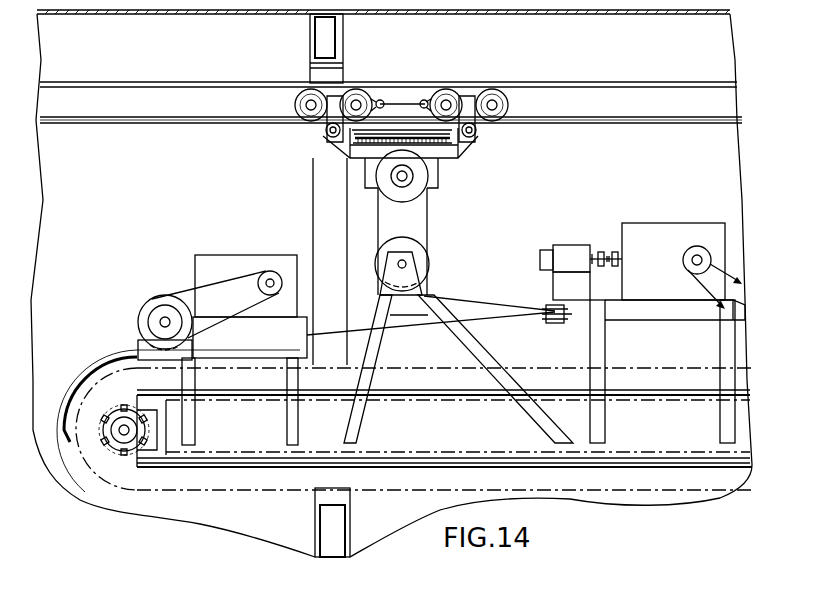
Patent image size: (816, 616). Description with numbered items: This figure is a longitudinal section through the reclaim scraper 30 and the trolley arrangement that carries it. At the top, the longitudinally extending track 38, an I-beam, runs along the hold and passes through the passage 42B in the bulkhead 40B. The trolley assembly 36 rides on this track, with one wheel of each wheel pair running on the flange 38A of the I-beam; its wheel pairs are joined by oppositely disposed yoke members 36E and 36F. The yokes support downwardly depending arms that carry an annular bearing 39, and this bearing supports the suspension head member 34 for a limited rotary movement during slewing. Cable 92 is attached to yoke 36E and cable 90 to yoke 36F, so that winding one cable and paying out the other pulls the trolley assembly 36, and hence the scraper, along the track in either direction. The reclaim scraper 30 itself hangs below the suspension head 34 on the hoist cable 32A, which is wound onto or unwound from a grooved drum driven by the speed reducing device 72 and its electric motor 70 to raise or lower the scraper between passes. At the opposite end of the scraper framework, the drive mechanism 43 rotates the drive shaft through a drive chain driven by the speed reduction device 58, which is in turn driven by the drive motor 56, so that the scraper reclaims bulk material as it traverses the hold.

The reclaim scraper 30 is at (462, 435).
The cable 32A is at (483, 300).
The suspension head member 34 is at (403, 128).
The trolley assembly 36 is at (412, 88).
The yoke members 36E is at (333, 97).
The yoke members 36F is at (467, 97).
The track 38 is at (210, 82).
The flange 38A is at (188, 118).
The annular bearing 39 is at (447, 165).
The bulkhead 40B is at (309, 37).
The passage 42B is at (330, 68).
The drive mechanism 43 is at (670, 290).
The drive motor 56 is at (565, 248).
The speed reduction device 58 is at (682, 246).
The electric motor 70 is at (193, 281).
The speed reducing device 72 is at (251, 248).
The cable 90 is at (558, 123).
The cable 92 is at (210, 128).